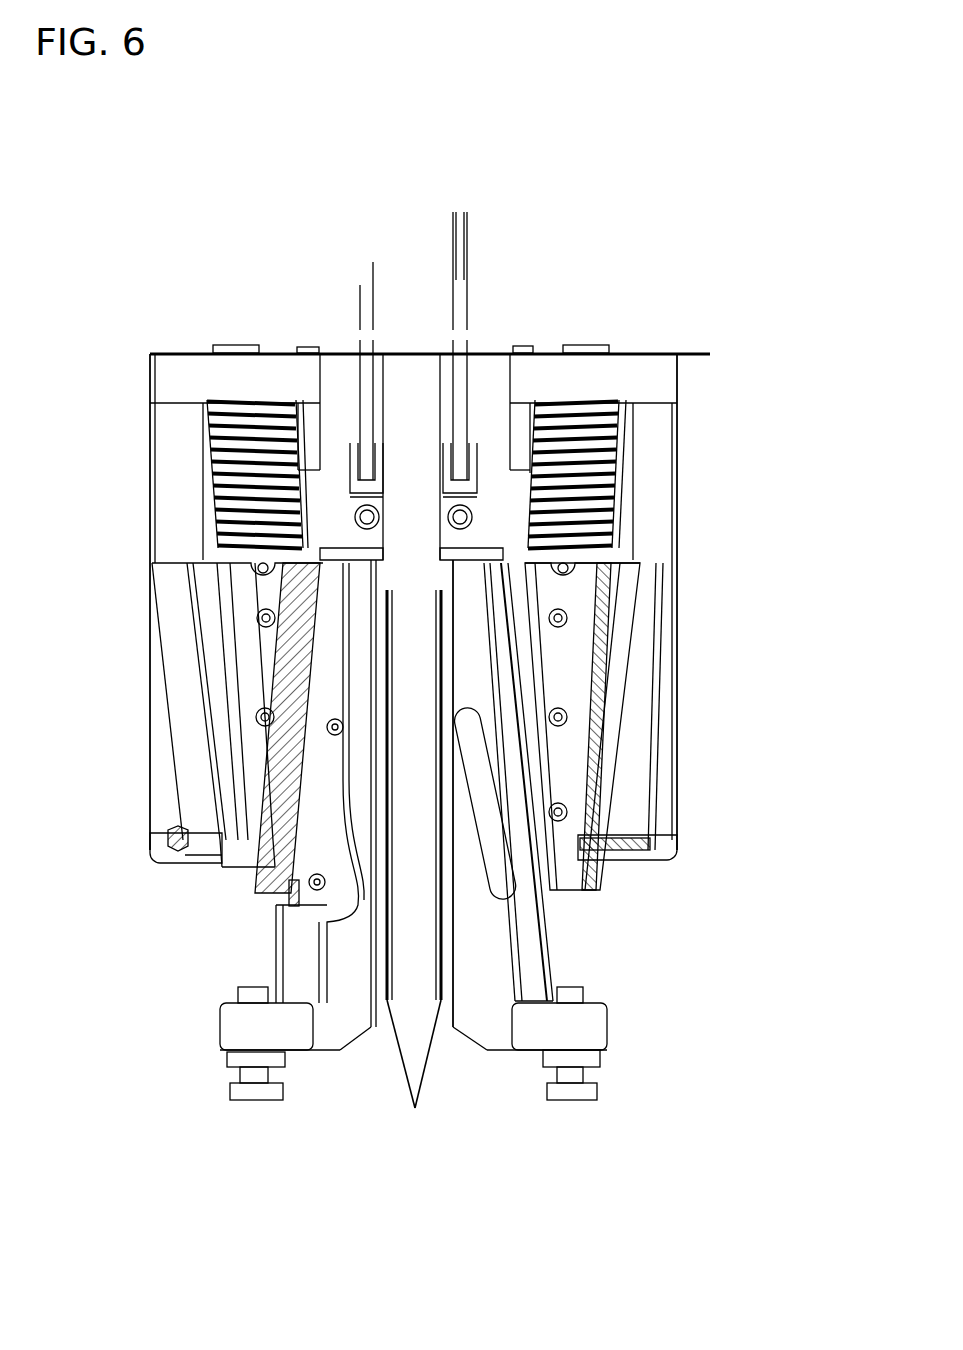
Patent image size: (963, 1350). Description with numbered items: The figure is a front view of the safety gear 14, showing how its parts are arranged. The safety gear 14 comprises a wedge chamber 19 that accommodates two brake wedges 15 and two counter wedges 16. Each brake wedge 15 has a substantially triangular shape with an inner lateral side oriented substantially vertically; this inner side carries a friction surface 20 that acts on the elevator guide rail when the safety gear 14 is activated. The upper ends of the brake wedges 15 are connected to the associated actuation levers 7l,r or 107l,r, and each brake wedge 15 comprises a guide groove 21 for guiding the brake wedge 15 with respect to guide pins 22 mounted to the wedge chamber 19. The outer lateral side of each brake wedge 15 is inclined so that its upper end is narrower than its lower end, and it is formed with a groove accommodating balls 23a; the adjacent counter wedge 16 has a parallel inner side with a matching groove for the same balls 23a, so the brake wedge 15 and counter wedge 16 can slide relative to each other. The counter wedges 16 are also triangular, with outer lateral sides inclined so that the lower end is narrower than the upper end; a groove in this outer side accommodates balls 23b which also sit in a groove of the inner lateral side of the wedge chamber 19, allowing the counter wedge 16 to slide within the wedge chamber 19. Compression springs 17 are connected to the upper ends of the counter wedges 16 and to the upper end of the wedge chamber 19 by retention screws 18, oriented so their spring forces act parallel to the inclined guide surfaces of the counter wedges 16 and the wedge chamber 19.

The safety gear 14 is at (243, 296).
The actuation levers 7l,r is at (373, 282).
The actuation levers 107l,r is at (609, 245).
The retention screws 18 is at (237, 377).
The guide groove 21 is at (613, 400).
The compression springs 17 is at (245, 500).
The counter wedges 16 is at (220, 703).
The balls 23a is at (525, 668).
The balls 23b is at (605, 663).
The brake wedges 15 is at (480, 687).
The wedge chamber 19 is at (160, 845).
The guide pins 22 is at (333, 734).
The friction surface 20 is at (414, 882).